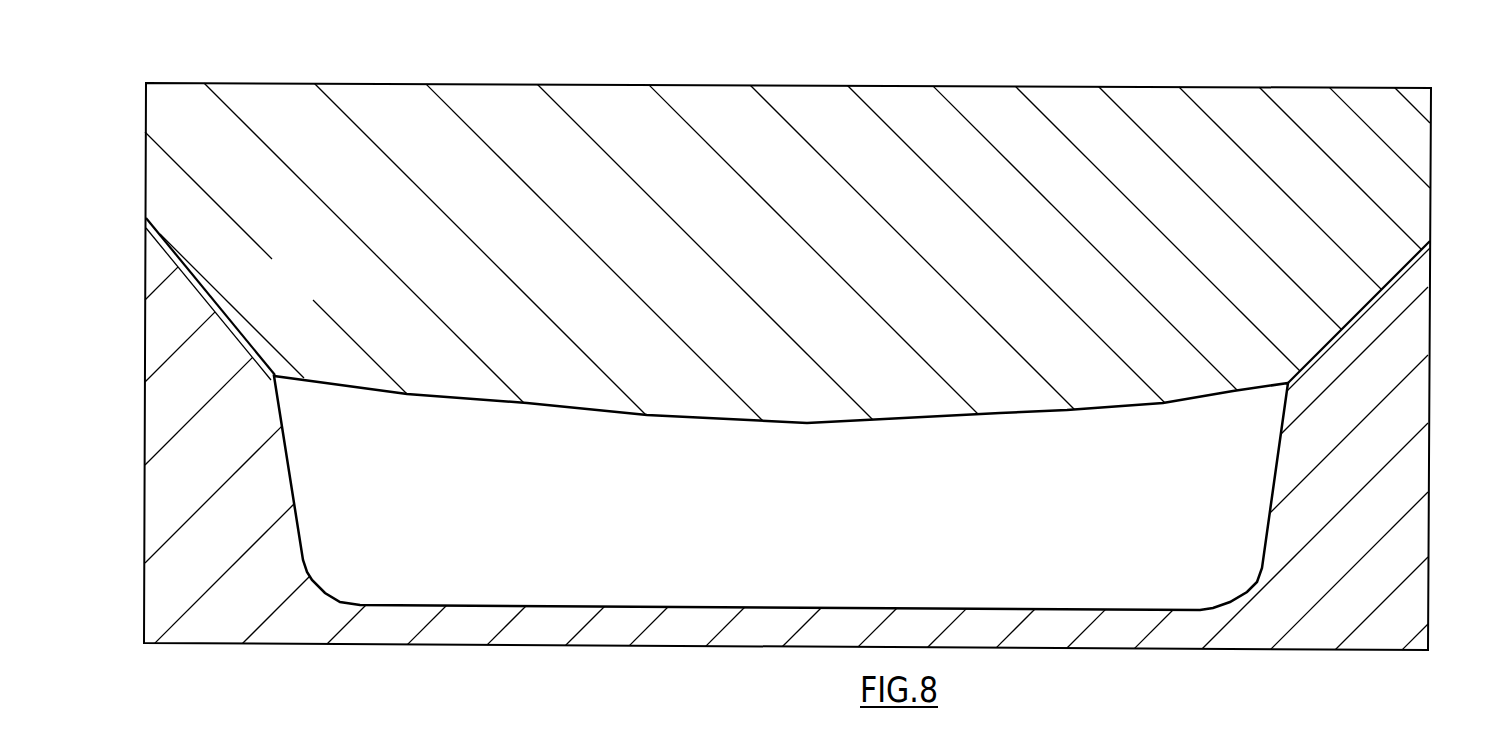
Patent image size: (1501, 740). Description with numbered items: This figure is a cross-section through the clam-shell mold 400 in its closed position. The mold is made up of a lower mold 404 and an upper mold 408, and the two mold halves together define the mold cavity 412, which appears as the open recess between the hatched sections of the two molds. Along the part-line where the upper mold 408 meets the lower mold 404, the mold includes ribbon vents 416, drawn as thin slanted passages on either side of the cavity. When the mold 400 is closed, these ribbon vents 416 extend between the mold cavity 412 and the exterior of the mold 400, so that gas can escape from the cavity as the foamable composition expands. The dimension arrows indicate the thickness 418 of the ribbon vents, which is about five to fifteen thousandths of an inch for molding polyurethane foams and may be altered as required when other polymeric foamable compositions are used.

The clam-shell mold 400 is at (737, 57).
The lower mold 404 is at (1428, 588).
The upper mold 408 is at (1237, 87).
The mold cavity 412 is at (842, 536).
The ribbon vents 416 is at (175, 255).
The thickness 418 is at (197, 353).